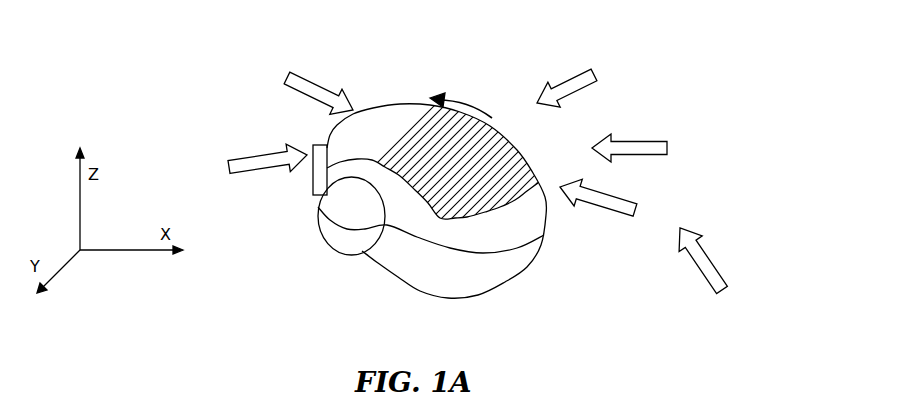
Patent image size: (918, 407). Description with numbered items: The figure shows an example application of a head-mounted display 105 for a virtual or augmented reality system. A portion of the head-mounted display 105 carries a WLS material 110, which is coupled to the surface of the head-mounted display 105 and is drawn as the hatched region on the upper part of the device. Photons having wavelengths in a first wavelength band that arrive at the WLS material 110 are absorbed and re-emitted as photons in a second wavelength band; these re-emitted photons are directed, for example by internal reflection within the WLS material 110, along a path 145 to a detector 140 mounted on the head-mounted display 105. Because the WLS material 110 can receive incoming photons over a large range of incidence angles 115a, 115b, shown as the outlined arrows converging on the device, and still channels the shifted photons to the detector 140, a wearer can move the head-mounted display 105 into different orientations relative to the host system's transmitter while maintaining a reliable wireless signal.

The head-mounted display 105 is at (485, 293).
The WLS material 110 is at (521, 187).
The incidence angle 115a is at (643, 147).
The incidence angle 115b is at (720, 267).
The detector 140 is at (313, 173).
The path 145 is at (462, 104).